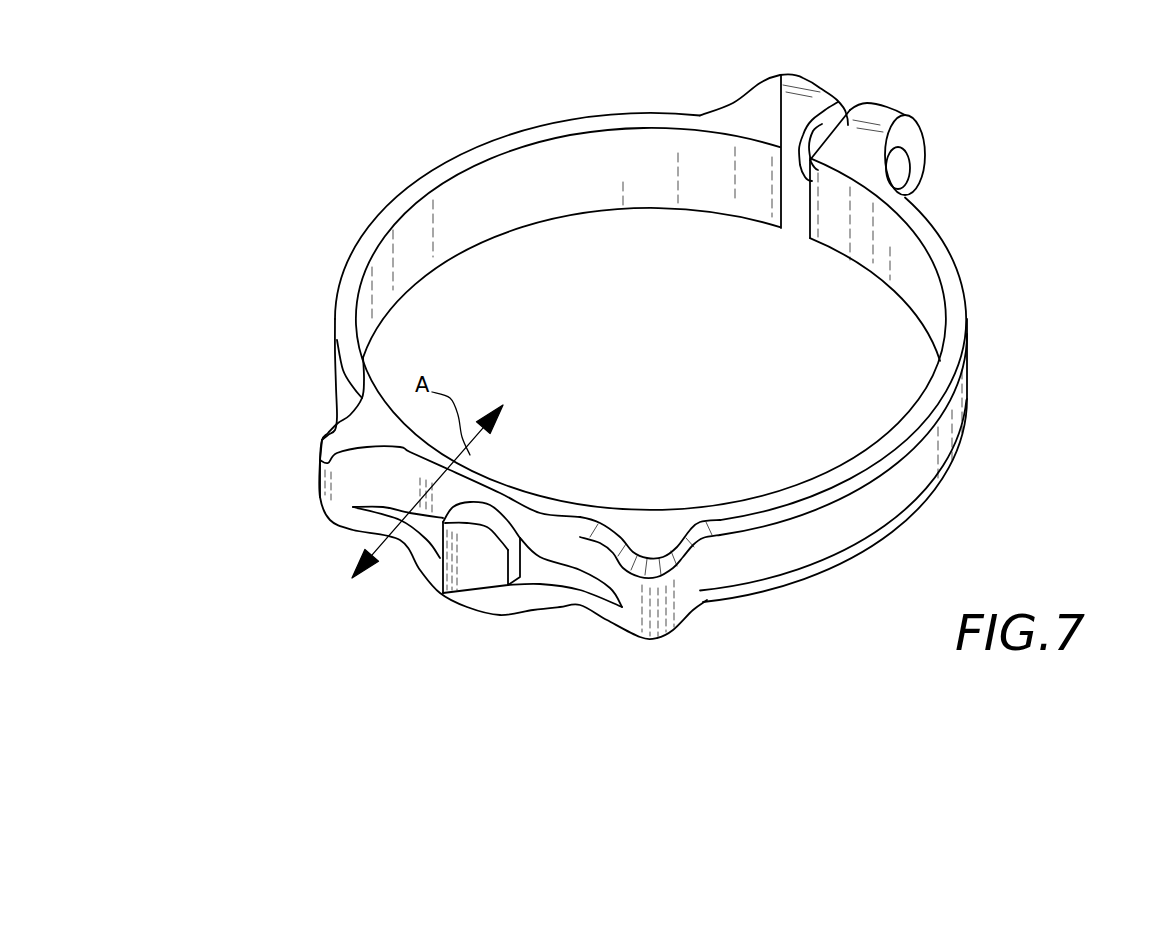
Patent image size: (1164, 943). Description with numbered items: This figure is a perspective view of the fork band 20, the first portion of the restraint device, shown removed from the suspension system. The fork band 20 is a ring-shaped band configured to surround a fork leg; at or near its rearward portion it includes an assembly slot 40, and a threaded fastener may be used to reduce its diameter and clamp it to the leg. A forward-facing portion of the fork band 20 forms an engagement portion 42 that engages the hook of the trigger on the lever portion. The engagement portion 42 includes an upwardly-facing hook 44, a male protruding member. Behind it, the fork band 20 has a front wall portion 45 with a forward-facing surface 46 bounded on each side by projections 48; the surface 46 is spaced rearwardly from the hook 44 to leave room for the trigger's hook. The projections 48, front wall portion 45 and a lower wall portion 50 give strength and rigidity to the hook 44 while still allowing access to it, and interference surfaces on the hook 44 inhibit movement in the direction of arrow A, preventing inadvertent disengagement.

The fork band 20 is at (1040, 278).
The assembly slot 40 is at (855, 98).
The engagement portion 42 is at (375, 619).
The hook 44 is at (502, 531).
The front wall portion 45 is at (522, 497).
The forward-facing surface 46 is at (583, 548).
The projections 48 is at (330, 491).
The lower wall portion 50 is at (582, 597).